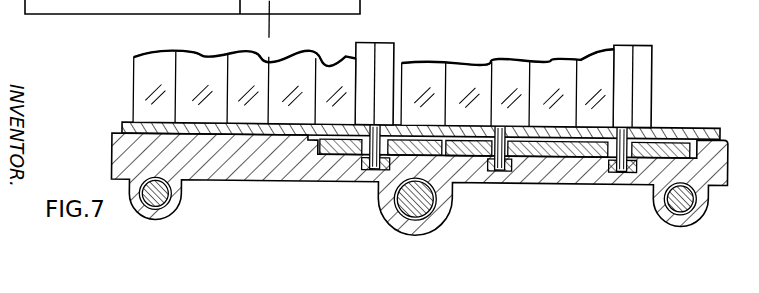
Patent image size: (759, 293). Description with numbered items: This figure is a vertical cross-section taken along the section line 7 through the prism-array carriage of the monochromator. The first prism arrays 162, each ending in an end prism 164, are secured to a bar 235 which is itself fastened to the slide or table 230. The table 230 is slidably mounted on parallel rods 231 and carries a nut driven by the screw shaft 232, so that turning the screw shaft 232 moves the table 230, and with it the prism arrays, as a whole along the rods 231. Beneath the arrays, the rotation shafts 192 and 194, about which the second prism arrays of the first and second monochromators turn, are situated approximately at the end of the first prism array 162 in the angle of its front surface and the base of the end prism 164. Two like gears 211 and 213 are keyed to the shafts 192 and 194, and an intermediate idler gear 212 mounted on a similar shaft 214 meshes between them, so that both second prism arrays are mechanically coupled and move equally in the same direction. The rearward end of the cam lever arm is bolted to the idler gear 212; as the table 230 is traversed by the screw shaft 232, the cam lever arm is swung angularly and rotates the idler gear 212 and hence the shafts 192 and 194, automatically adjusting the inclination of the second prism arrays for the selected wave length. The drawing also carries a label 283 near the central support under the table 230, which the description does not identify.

The section line 7 is at (276, 32).
The first prism array 162 is at (309, 47).
The end prism 164 is at (150, 72).
The shaft 192 is at (621, 168).
The shaft 194 is at (368, 167).
The gear 211 is at (586, 152).
The intermediate idler gear 212 is at (540, 152).
The gear 213 is at (341, 150).
The shaft 214 is at (470, 152).
The slide or table 230 is at (294, 181).
The parallel rods 231 is at (167, 203).
The screw shaft 232 is at (432, 208).
The bar 235 is at (690, 122).
The ball socket 283 is at (392, 226).